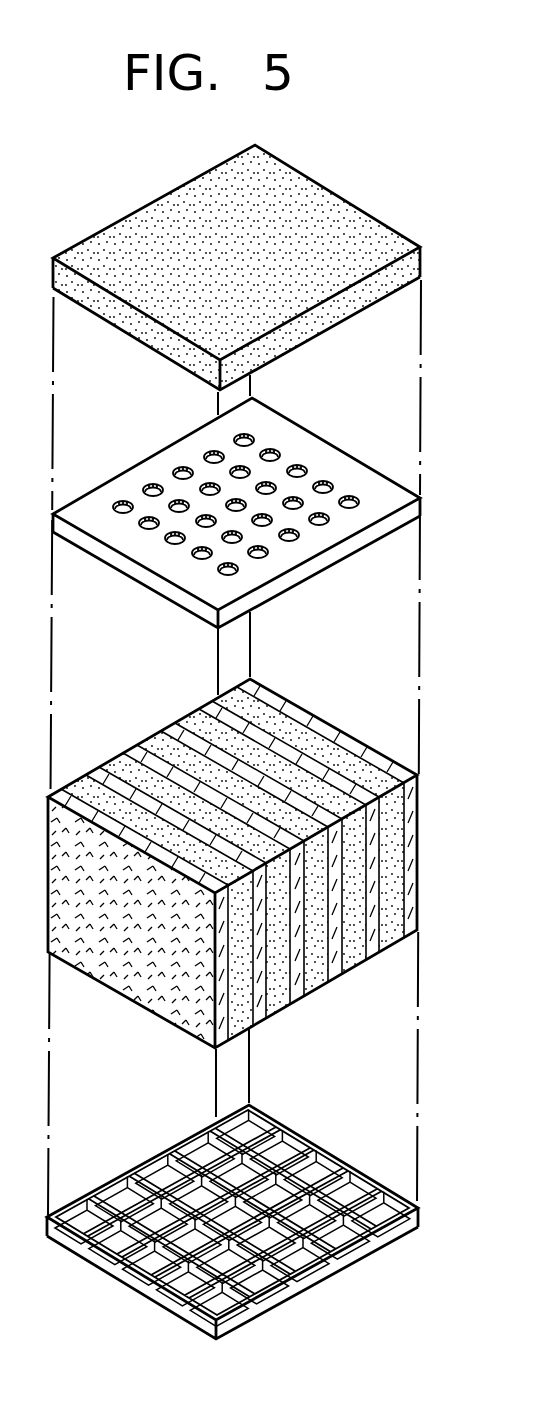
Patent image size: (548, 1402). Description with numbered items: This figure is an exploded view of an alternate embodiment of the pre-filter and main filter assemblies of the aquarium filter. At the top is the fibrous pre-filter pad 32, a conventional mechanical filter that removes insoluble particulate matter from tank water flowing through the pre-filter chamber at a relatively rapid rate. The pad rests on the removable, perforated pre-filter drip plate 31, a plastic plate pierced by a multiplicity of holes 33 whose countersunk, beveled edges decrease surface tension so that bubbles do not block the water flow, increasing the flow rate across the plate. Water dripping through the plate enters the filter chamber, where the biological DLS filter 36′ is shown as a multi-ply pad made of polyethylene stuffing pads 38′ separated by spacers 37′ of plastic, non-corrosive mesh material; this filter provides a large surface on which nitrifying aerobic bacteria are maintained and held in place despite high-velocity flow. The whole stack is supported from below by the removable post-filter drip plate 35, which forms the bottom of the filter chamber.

The pre-filter drip plate 31 is at (355, 470).
The pre-filter pad 32 is at (78, 252).
The holes 33 is at (150, 483).
The post-filter drip plate 35 is at (370, 1243).
The DLS filter 36′ is at (366, 710).
The spacers 37′ is at (340, 983).
The polyethylene stuffing pads 38′ is at (150, 735).